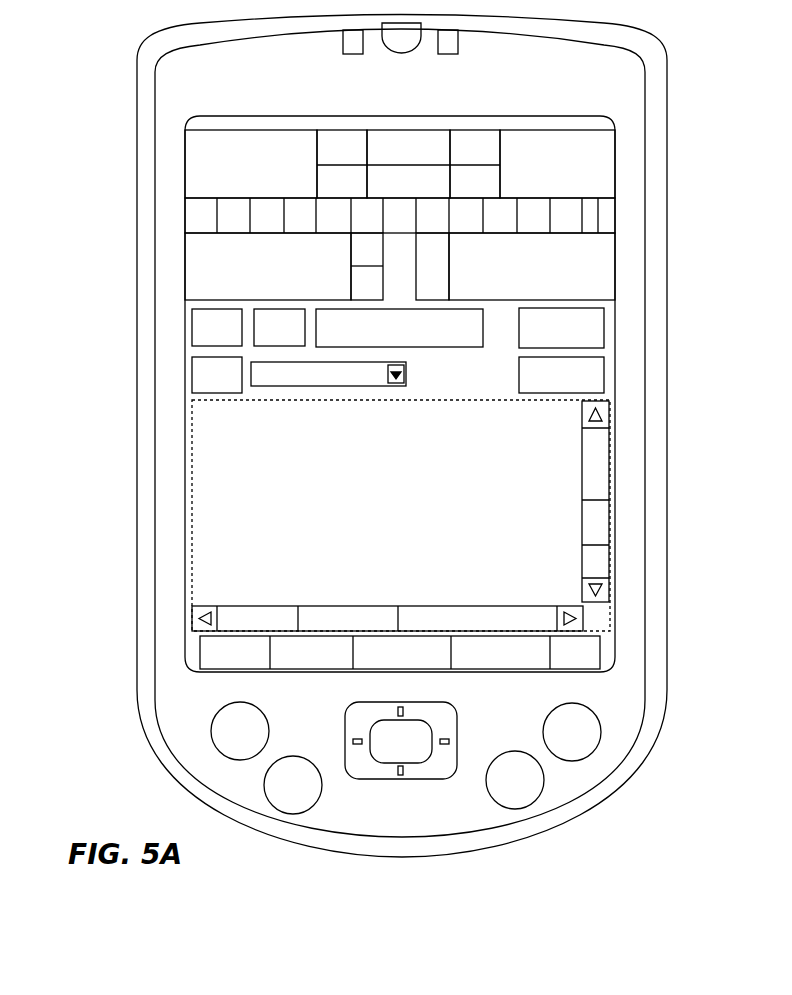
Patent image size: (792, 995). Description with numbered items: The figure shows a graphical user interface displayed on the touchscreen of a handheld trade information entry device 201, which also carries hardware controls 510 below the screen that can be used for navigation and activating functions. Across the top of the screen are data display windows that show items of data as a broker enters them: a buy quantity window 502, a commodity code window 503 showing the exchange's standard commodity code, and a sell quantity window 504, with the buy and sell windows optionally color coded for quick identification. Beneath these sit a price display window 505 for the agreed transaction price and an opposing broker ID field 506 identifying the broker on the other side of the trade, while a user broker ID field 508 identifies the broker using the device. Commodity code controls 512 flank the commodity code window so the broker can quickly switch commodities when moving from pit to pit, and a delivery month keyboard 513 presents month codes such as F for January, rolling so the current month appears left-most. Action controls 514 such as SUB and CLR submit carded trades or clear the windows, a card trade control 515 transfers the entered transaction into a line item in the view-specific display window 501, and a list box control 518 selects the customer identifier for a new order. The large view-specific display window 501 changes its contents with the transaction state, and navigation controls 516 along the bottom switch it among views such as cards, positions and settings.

The trade information entry device 201 is at (137, 512).
The view-specific display window 501 is at (401, 515).
The buy quantity window 502 is at (186, 157).
The commodity code window 503 is at (420, 138).
The sell quantity window 504 is at (616, 158).
The price display window 505 is at (186, 271).
The opposing broker ID field 506 is at (616, 257).
The user broker ID field 508 is at (420, 347).
The hardware controls 510 is at (566, 773).
The commodity code controls 512 is at (349, 138).
The delivery month keyboard 513 is at (186, 215).
The action controls 514 is at (152, 334).
The card trade control 515 is at (600, 336).
The navigation controls 516 is at (167, 654).
The list box control 518 is at (320, 378).